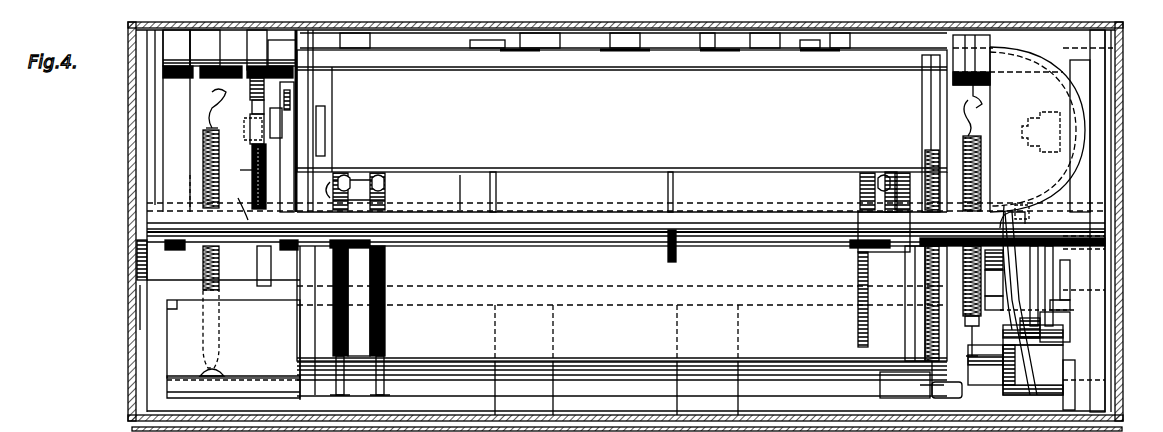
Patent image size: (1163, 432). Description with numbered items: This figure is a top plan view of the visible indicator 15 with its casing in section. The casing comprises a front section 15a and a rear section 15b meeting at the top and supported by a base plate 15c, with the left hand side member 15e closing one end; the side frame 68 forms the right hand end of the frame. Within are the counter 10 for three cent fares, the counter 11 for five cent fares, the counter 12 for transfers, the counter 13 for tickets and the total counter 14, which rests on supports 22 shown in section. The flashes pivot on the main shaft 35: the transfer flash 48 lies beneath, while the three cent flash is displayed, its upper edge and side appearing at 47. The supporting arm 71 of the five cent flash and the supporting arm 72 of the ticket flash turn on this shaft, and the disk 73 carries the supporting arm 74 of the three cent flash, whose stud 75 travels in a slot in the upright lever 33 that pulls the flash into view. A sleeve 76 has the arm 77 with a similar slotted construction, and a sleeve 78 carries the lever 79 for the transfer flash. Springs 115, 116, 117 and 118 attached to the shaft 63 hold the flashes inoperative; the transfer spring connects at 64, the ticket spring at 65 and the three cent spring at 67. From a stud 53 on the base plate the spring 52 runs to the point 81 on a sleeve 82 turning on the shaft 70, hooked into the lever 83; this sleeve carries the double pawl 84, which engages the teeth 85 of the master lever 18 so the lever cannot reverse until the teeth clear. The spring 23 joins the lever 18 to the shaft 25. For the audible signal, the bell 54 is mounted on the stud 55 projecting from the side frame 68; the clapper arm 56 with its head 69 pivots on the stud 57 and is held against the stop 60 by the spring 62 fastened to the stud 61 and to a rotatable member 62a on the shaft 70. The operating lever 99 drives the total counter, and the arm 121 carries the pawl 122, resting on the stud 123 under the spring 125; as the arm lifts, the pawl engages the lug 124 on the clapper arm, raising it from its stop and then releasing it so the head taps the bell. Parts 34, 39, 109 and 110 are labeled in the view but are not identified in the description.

The three cent fare counter 10 is at (218, 318).
The five cent fare counter 11 is at (496, 278).
The transfer counter 12 is at (588, 292).
The ticket counter 13 is at (762, 290).
The total counter 14 is at (946, 320).
The visible indicator 15 is at (134, 192).
The front section 15a is at (140, 412).
The rear section 15b is at (128, 25).
The base plate 15c is at (175, 258).
The left hand side member 15e is at (136, 312).
The master lever 18 is at (258, 252).
The support for total counter 22 is at (180, 290).
The spring 23 is at (252, 180).
The shaft 25 is at (235, 201).
The upright lever 33 is at (318, 140).
The latch 34 is at (250, 134).
The main shaft 35 is at (181, 190).
The side plate 39 is at (155, 136).
The three cent flash 47 is at (405, 60).
The transfer flash 48 is at (596, 172).
The spring 52 is at (203, 152).
The stud 53 is at (222, 370).
The bell 54 is at (1050, 104).
The stud 55 is at (1036, 116).
The clapper arm 56 is at (1010, 268).
The stud 57 is at (1065, 372).
The stop 60 is at (1070, 334).
The stud 61 is at (995, 360).
The spring 62 is at (982, 190).
The rotatable member 62a is at (980, 95).
The shaft 63 is at (262, 372).
The point of connection 64 is at (328, 372).
The point of attachment 65 is at (870, 402).
The point of attachment 67 is at (920, 402).
The side frame 68 is at (1095, 150).
The hammer 69 is at (1005, 212).
The shaft 70 is at (185, 55).
The supporting arm of five cent flash 71 is at (372, 172).
The supporting arm of ticket flash 72 is at (388, 192).
The disk 73 is at (271, 266).
The supporting arm of three cent flash 74 is at (300, 180).
The stud 75 is at (328, 108).
The sleeve 76 is at (454, 252).
The arm 77 is at (494, 190).
The sleeve 78 is at (652, 242).
The lever 79 is at (674, 192).
The point of attachment 81 is at (208, 100).
The sleeve 82 is at (248, 89).
The projecting lever 83 is at (190, 82).
The double pawl 84 is at (272, 70).
The teeth 85 is at (254, 104).
The operating lever 99 is at (1050, 272).
The spring 109 is at (330, 320).
The rod 110 is at (252, 146).
The spring 115 is at (336, 172).
The spring 116 is at (622, 321).
The spring 117 is at (882, 180).
The spring 118 is at (975, 345).
The arm 121 is at (1070, 292).
The pawl 122 is at (1022, 288).
The stud 123 is at (1070, 306).
The lug 124 is at (1065, 340).
The spring 125 is at (1020, 310).